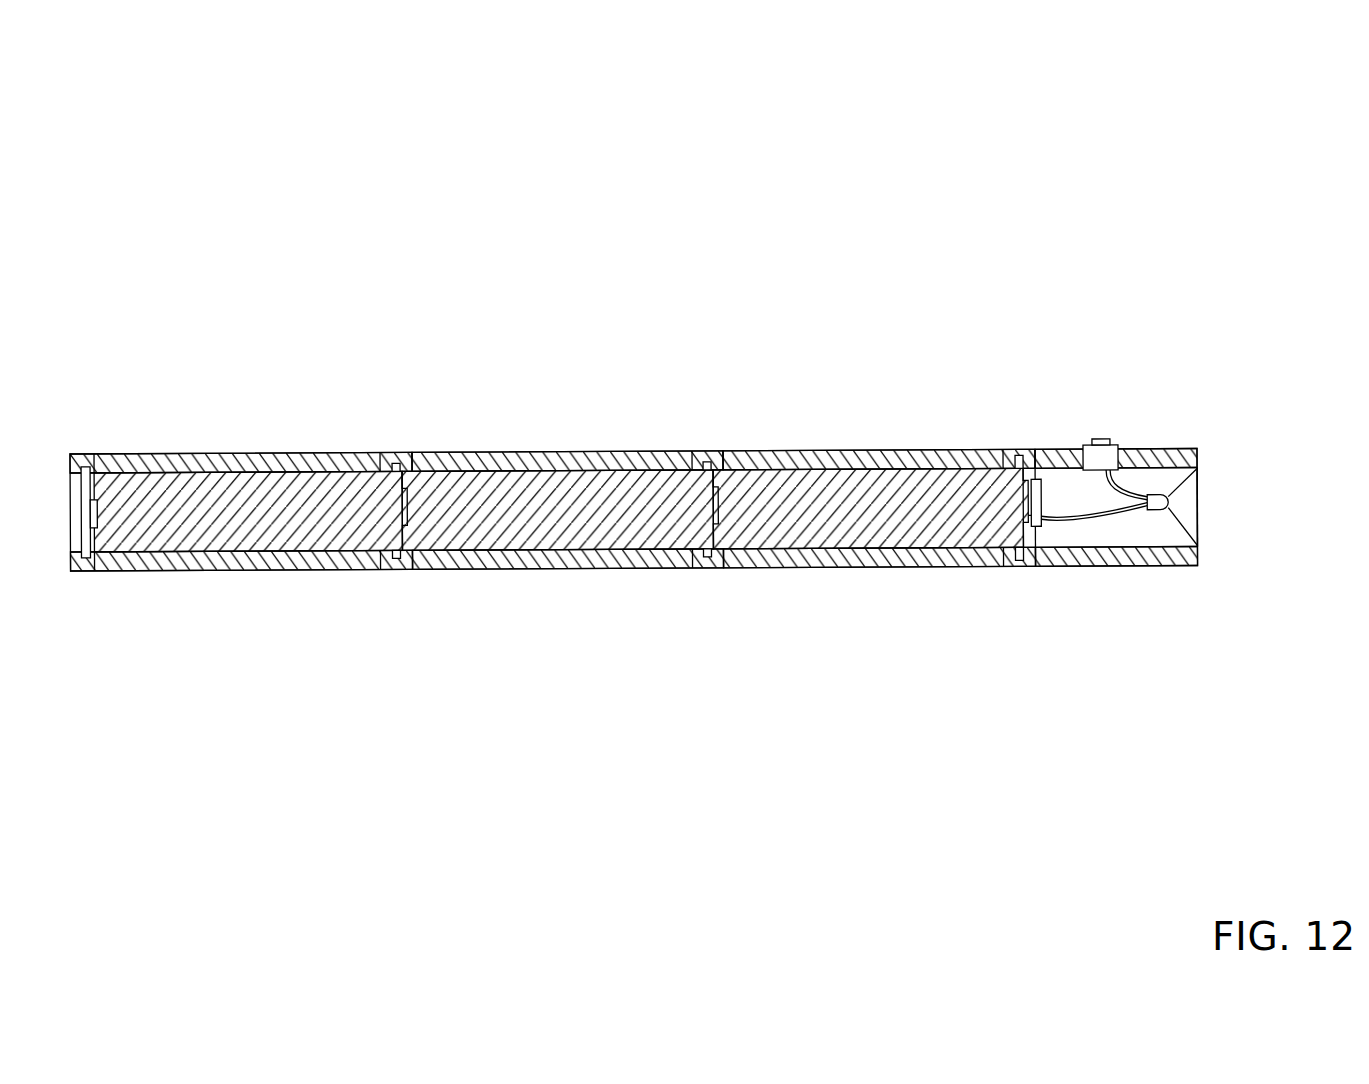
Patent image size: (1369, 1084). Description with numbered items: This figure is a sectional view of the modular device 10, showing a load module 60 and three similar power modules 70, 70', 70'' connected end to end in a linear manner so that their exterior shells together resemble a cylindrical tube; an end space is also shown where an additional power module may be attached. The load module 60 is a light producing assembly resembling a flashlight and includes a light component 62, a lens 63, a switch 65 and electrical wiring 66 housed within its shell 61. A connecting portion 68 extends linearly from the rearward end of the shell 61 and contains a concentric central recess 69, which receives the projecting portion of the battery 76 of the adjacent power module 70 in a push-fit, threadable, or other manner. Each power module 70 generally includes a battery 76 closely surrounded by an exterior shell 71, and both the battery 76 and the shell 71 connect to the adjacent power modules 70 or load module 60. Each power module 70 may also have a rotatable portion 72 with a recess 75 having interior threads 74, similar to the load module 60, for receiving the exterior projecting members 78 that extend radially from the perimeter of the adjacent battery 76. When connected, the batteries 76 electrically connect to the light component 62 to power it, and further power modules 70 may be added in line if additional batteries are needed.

The device 10 is at (1085, 172).
The load module 60 is at (1163, 448).
The shell 61 is at (1118, 560).
The light component 62 is at (1173, 507).
The lens 63 is at (1198, 492).
The switch 65 is at (1105, 445).
The electrical wiring 66 is at (1092, 518).
The connecting portion 68 is at (1022, 452).
The central recess 69 is at (1003, 470).
The power module 70 is at (874, 434).
The power module 70' is at (563, 430).
The power module 70'' is at (241, 448).
The exterior shell 71 is at (972, 566).
The rotatable portion 72 is at (707, 455).
The interior threads 74 is at (703, 552).
The recess 75 is at (690, 472).
The battery 76 is at (858, 544).
The projecting members 78 is at (1017, 464).